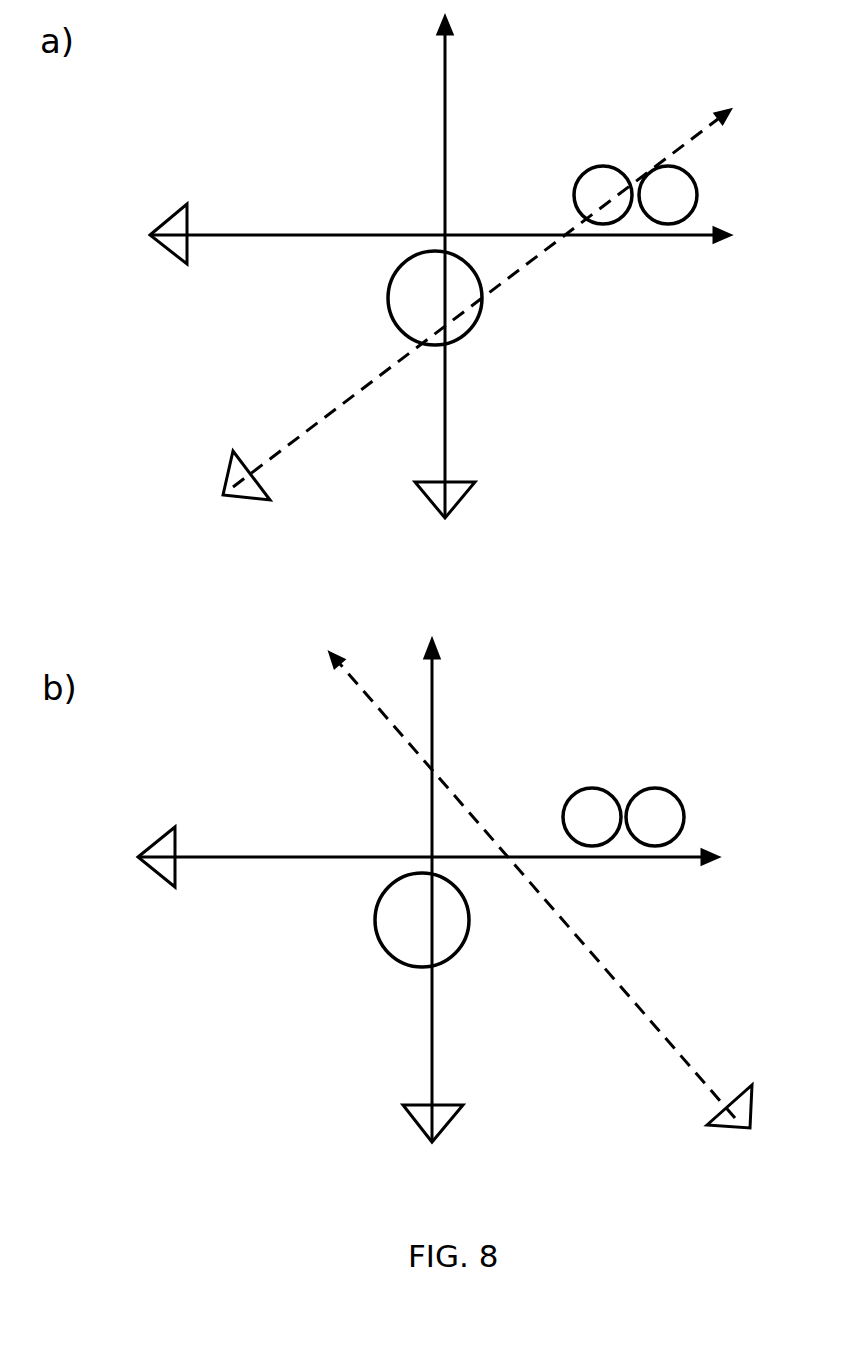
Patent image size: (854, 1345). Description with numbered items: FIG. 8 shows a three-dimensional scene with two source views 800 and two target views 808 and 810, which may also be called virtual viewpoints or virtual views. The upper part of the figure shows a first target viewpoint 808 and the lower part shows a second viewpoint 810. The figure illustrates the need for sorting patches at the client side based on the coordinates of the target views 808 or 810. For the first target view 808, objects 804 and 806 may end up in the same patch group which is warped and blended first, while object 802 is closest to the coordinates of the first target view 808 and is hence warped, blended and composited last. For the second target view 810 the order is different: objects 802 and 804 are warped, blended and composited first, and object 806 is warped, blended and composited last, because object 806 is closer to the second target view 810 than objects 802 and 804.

The source view 800 is at (180, 258).
The object 802 is at (388, 296).
The object 804 is at (598, 166).
The object 806 is at (670, 224).
The first target view 808 is at (250, 500).
The second target view 810 is at (727, 1130).